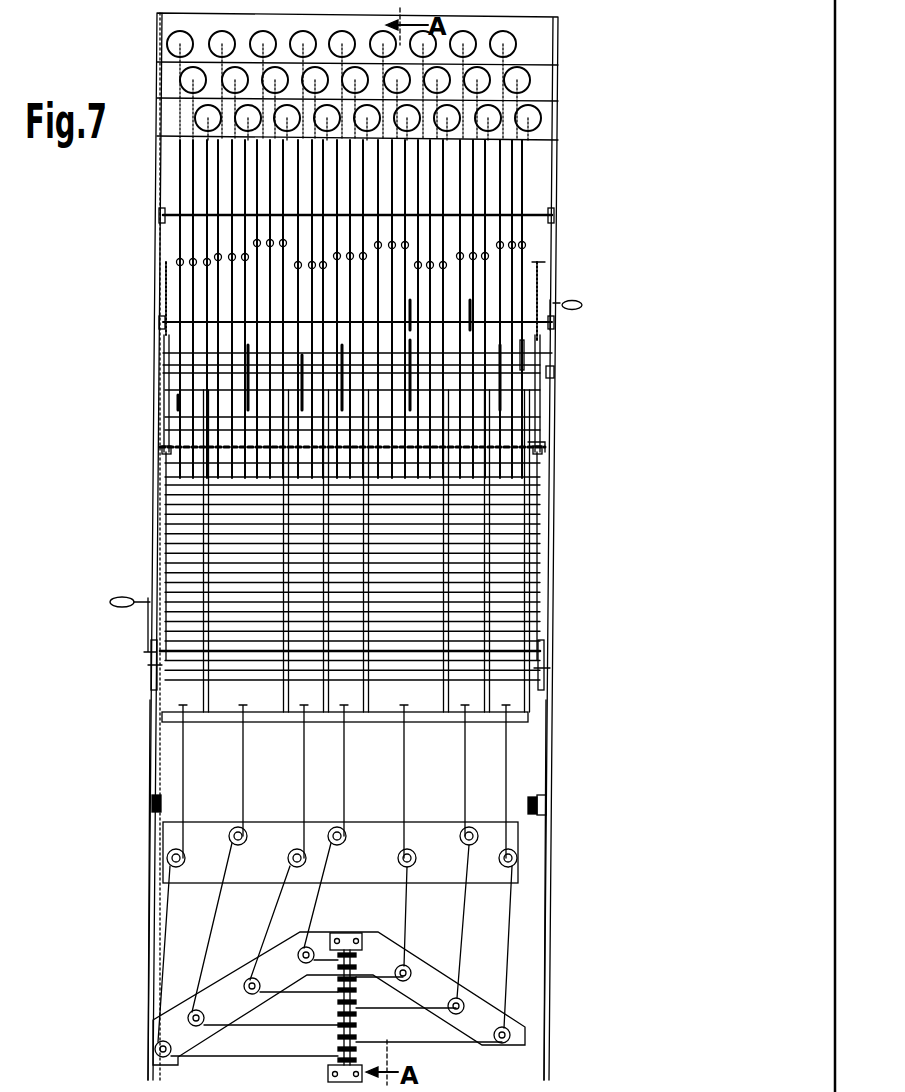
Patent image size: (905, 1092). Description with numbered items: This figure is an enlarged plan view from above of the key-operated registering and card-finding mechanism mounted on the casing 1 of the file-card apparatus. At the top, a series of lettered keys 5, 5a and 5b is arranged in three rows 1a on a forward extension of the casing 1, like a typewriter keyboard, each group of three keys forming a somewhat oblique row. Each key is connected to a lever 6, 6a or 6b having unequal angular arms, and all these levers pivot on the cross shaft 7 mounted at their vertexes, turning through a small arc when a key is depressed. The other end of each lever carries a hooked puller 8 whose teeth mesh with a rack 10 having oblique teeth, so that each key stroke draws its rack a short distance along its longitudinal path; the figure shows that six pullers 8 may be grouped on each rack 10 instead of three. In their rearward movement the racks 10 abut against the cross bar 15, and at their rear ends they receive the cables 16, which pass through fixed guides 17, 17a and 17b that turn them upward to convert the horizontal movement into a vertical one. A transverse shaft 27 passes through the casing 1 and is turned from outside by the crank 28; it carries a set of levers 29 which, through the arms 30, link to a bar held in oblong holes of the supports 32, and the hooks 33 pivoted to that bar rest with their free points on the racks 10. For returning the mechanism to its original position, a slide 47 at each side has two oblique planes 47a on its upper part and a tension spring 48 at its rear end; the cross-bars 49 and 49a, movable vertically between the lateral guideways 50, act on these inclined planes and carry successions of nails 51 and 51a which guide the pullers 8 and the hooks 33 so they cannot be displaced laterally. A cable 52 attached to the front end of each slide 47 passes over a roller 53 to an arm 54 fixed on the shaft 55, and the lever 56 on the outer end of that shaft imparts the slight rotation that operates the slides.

The casing 1 is at (157, 486).
The rows 1a is at (182, 108).
The key 5 is at (222, 52).
The key 5a is at (242, 78).
The key 5b is at (290, 118).
The lever 6 is at (522, 188).
The lever 6a is at (500, 170).
The lever 6b is at (522, 155).
The cross shaft 7 is at (165, 214).
The puller 8 is at (193, 275).
The tension spring 48 is at (166, 297).
The crank 28 is at (584, 305).
The oblique planes 47a is at (538, 355).
The cross-bar 49a is at (556, 372).
The lateral guideways 50 is at (540, 432).
The cross-bar 49 is at (170, 447).
The nails 51 is at (545, 455).
The nails 51a is at (506, 366).
The levers 29 is at (412, 305).
The shaft 27 is at (472, 318).
The supports 32 is at (346, 360).
The arms 30 is at (412, 350).
The hooks 33 is at (500, 370).
The slide 47 is at (166, 518).
The rack 10 is at (415, 530).
The shaft 55 is at (538, 651).
The arm 54 is at (160, 660).
The lever 56 is at (118, 606).
The cable 52 is at (150, 768).
The roller 53 is at (164, 803).
The cross bar 15 is at (420, 722).
The cable 16 is at (465, 740).
The guide 17 is at (405, 850).
The guide 17a is at (302, 950).
The guide 17b is at (356, 1043).